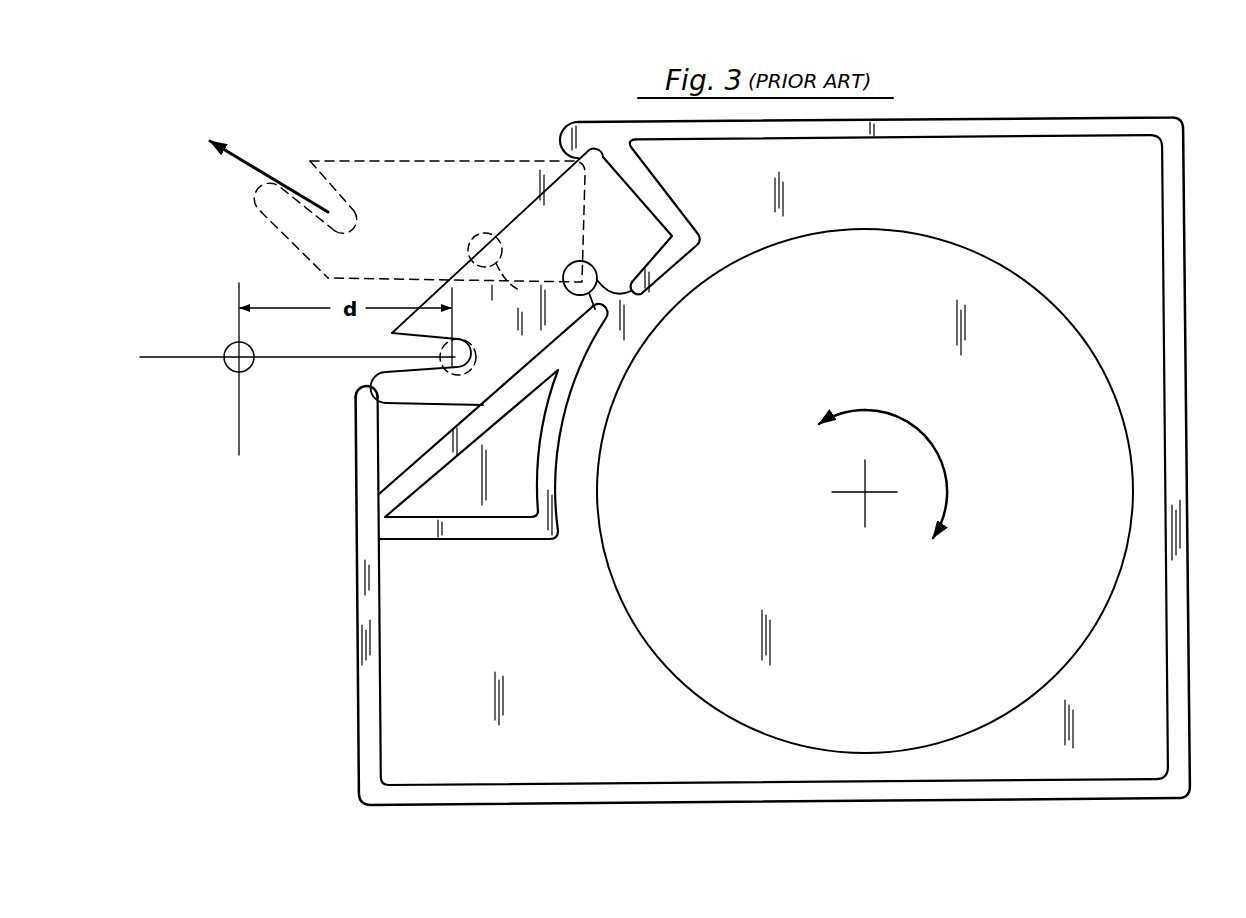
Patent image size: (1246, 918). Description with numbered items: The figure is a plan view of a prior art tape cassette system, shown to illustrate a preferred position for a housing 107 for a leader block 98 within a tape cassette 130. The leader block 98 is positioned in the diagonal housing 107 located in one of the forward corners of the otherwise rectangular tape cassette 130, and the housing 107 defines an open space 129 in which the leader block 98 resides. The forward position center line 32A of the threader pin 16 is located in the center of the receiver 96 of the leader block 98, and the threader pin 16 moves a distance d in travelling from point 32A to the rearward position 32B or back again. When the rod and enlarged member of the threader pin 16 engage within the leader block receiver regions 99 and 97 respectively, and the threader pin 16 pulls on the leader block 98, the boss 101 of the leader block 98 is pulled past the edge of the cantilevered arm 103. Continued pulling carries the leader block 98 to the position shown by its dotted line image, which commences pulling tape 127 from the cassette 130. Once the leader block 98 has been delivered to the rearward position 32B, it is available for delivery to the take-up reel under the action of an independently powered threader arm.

The threader pin 16 is at (227, 344).
The forward position center line 32A is at (464, 338).
The rearward position 32B is at (250, 270).
The receiver 96 is at (319, 196).
The leader block receiver region 97 is at (353, 197).
The leader block 98 is at (476, 158).
The leader block receiver region 99 is at (457, 378).
The boss 101 is at (504, 252).
The cantilevered arm 103 is at (354, 392).
The housing 107 is at (695, 211).
The tape 127 is at (647, 300).
The open space 129 is at (642, 250).
The tape cassette 130 is at (1189, 295).